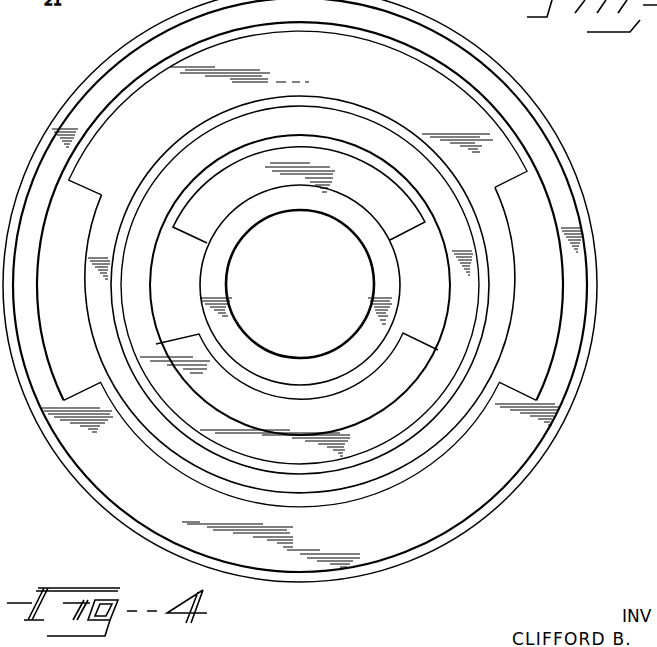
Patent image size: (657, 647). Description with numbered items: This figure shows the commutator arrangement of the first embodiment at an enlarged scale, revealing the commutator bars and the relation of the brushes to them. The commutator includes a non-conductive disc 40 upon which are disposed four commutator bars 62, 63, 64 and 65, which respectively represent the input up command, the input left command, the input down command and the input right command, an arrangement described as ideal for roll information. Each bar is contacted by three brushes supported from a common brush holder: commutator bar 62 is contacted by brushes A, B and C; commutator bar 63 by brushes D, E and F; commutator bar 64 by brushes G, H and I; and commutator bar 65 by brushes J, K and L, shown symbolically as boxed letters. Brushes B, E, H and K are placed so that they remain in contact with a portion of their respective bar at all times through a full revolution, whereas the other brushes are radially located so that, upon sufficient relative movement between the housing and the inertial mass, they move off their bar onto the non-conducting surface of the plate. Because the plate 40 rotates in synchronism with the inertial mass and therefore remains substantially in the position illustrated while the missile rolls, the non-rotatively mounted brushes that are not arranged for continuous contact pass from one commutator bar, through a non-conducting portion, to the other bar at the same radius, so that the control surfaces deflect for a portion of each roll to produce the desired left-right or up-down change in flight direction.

The non-conductive disc 40 is at (588, 212).
The commutator bar 62 is at (428, 62).
The commutator bar 63 is at (458, 338).
The commutator bar 64 is at (381, 550).
The commutator bar 65 is at (423, 226).
The brush A is at (121, 128).
The brush B is at (143, 149).
The brush C is at (452, 102).
The brush D is at (212, 391).
The brush E is at (423, 389).
The brush F is at (398, 369).
The brush G is at (145, 472).
The brush H is at (125, 497).
The brush I is at (485, 442).
The brush J is at (207, 207).
The brush K is at (355, 213).
The brush L is at (375, 191).